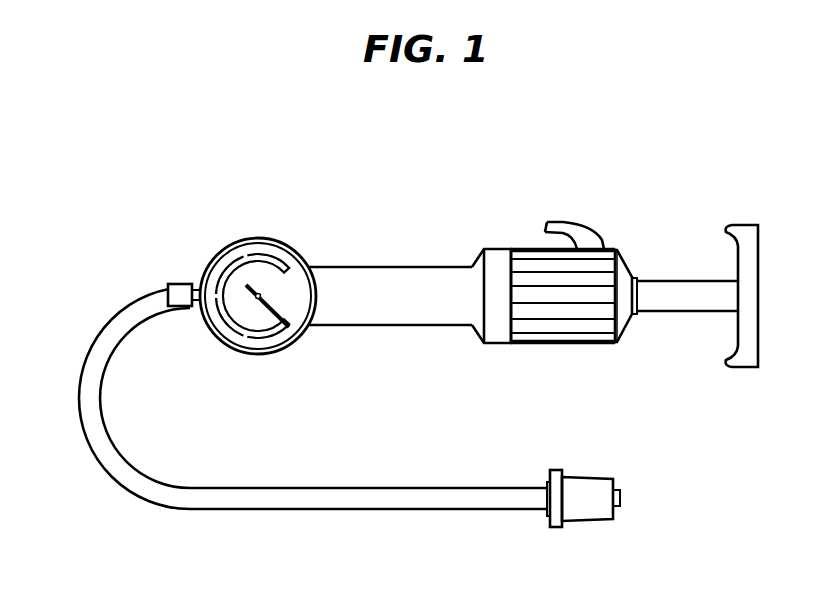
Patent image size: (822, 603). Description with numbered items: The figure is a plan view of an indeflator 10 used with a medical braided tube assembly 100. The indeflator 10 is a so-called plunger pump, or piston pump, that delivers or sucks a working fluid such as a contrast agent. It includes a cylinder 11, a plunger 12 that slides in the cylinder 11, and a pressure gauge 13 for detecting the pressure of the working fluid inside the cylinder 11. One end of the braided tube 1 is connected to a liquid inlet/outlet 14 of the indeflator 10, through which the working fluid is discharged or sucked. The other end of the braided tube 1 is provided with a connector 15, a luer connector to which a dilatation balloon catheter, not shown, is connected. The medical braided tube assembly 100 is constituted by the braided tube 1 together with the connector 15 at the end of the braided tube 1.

The braided tube 1 is at (112, 305).
The medical braided tube assembly 100 is at (100, 465).
The indeflator 10 is at (573, 162).
The cylinder 11 is at (400, 323).
The plunger 12 is at (687, 278).
The pressure gauge 13 is at (273, 240).
The liquid inlet/outlet 14 is at (198, 285).
The connector 15 is at (592, 477).